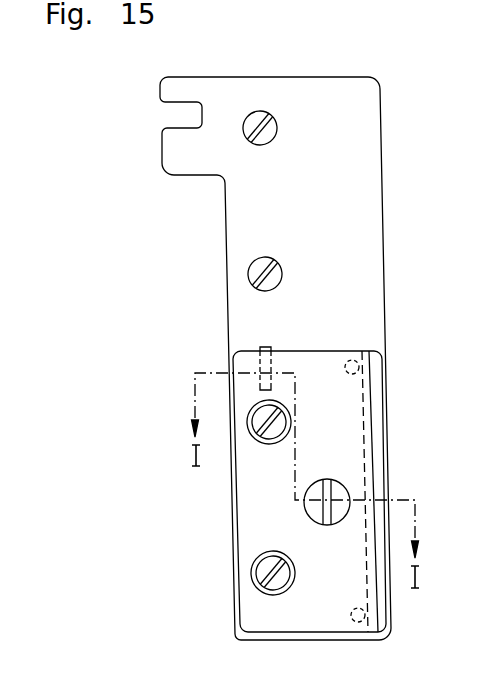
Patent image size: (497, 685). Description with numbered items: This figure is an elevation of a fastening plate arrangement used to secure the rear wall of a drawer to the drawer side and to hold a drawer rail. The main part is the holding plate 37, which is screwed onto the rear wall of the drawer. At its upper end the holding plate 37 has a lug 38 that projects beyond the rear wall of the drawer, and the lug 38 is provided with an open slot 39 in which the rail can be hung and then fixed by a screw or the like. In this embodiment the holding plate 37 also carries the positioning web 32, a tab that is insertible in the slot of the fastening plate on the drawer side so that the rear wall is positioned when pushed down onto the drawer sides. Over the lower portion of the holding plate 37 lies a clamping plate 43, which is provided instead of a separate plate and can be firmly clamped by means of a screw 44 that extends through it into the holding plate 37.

The holding plate 37 is at (355, 290).
The lug 38 is at (187, 158).
The open slot 39 is at (177, 105).
The positioning web 32 is at (266, 350).
The clamping plate 43 is at (292, 613).
The screw 44 is at (335, 488).